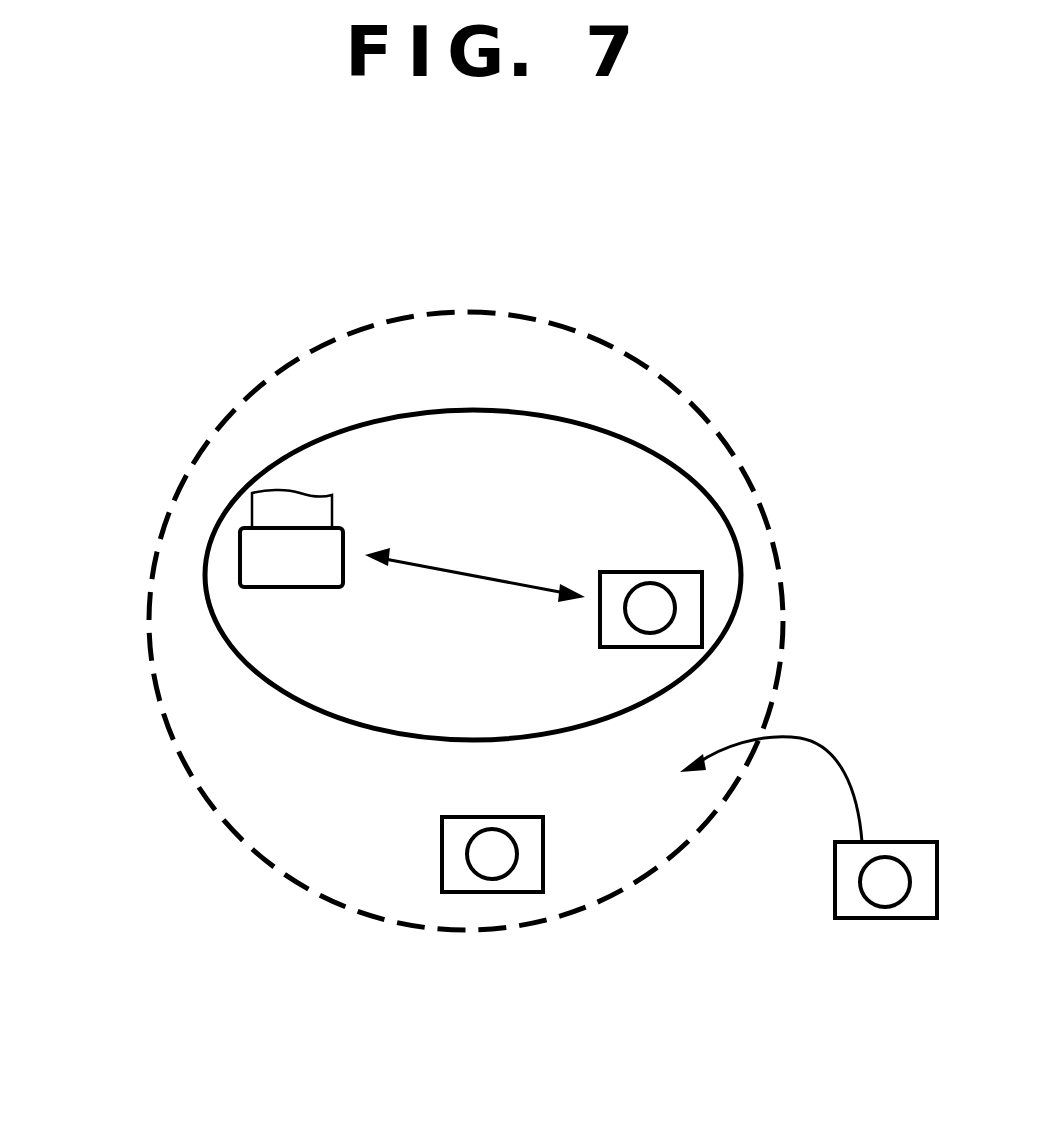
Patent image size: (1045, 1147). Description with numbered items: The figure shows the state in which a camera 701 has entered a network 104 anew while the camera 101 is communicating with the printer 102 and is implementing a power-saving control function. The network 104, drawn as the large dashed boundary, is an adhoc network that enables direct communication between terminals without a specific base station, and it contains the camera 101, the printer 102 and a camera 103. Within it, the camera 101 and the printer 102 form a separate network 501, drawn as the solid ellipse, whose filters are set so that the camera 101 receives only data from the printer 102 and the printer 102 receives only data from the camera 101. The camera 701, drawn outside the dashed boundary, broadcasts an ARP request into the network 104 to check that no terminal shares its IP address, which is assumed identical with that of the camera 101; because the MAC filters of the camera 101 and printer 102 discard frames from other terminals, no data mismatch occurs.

The network 501 is at (552, 413).
The network 104 is at (202, 783).
The printer 102 is at (240, 552).
The camera 101 is at (702, 604).
The camera 103 is at (493, 892).
The camera 701 is at (886, 918).